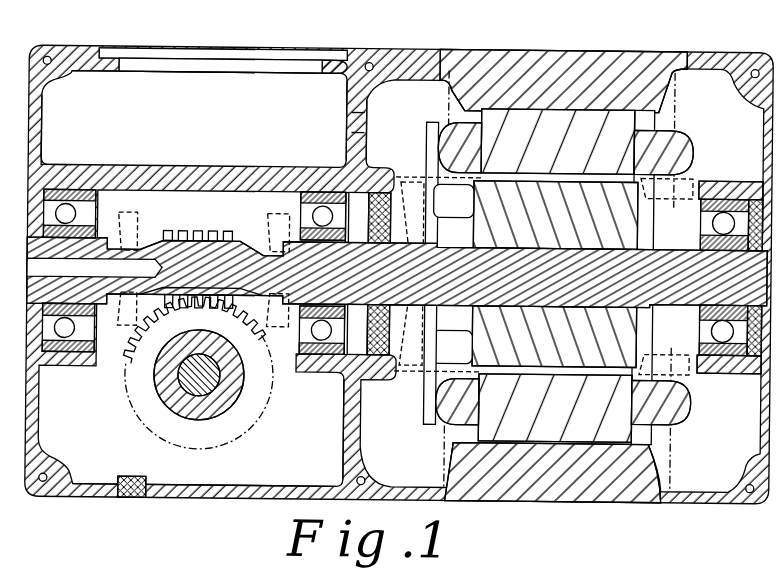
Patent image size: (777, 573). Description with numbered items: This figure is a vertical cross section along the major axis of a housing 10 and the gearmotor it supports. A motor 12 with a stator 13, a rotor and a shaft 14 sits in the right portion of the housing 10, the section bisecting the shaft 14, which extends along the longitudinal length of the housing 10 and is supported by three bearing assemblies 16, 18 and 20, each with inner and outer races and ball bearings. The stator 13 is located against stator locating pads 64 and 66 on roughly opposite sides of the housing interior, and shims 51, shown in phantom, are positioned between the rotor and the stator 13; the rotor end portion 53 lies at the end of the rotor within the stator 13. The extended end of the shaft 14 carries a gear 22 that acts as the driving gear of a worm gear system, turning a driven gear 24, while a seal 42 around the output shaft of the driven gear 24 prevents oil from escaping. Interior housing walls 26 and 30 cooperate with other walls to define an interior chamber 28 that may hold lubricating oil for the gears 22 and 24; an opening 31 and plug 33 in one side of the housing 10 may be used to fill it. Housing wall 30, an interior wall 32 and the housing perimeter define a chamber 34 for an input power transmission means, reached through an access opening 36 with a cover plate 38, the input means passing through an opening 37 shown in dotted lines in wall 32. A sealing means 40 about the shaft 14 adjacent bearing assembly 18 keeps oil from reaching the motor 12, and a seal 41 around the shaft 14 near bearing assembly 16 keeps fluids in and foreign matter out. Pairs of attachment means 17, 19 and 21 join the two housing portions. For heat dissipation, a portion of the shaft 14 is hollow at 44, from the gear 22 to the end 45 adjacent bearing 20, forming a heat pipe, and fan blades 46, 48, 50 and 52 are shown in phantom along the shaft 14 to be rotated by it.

The housing 10 is at (703, 502).
The motor 12 is at (694, 128).
The stator 13 is at (480, 424).
The shaft 14 is at (397, 274).
The bearing assembly 16 is at (722, 248).
The attachment means 17 is at (752, 62).
The bearing assembly 18 is at (362, 224).
The attachment means 19 is at (372, 62).
The bearing assembly 20 is at (43, 165).
The attachment means 21 is at (47, 58).
The gear 22 is at (178, 233).
The driven gear 24 is at (128, 368).
The interior housing wall 26 is at (345, 424).
The interior chamber 28 is at (320, 467).
The housing wall 30 is at (128, 172).
The opening 31 is at (143, 478).
The interior wall 32 is at (352, 150).
The plug 33 is at (126, 502).
The chamber 34 is at (191, 139).
The access opening 36 is at (248, 58).
The opening 37 is at (350, 125).
The cover plate 38 is at (295, 58).
The sealing means 40 is at (380, 360).
The seal 41 is at (762, 173).
The seal 42 is at (172, 424).
The hollow shaft portion 44 is at (93, 268).
The end 45 is at (40, 370).
The fan blades 46 is at (137, 215).
The fan blades 48 is at (270, 215).
The fan blades 50 is at (425, 375).
The shims 51 is at (405, 180).
The fan blades 52 is at (690, 392).
The end ring 53 is at (503, 390).
The stator locating pad 64 is at (570, 62).
The stator locating pad 66 is at (610, 494).